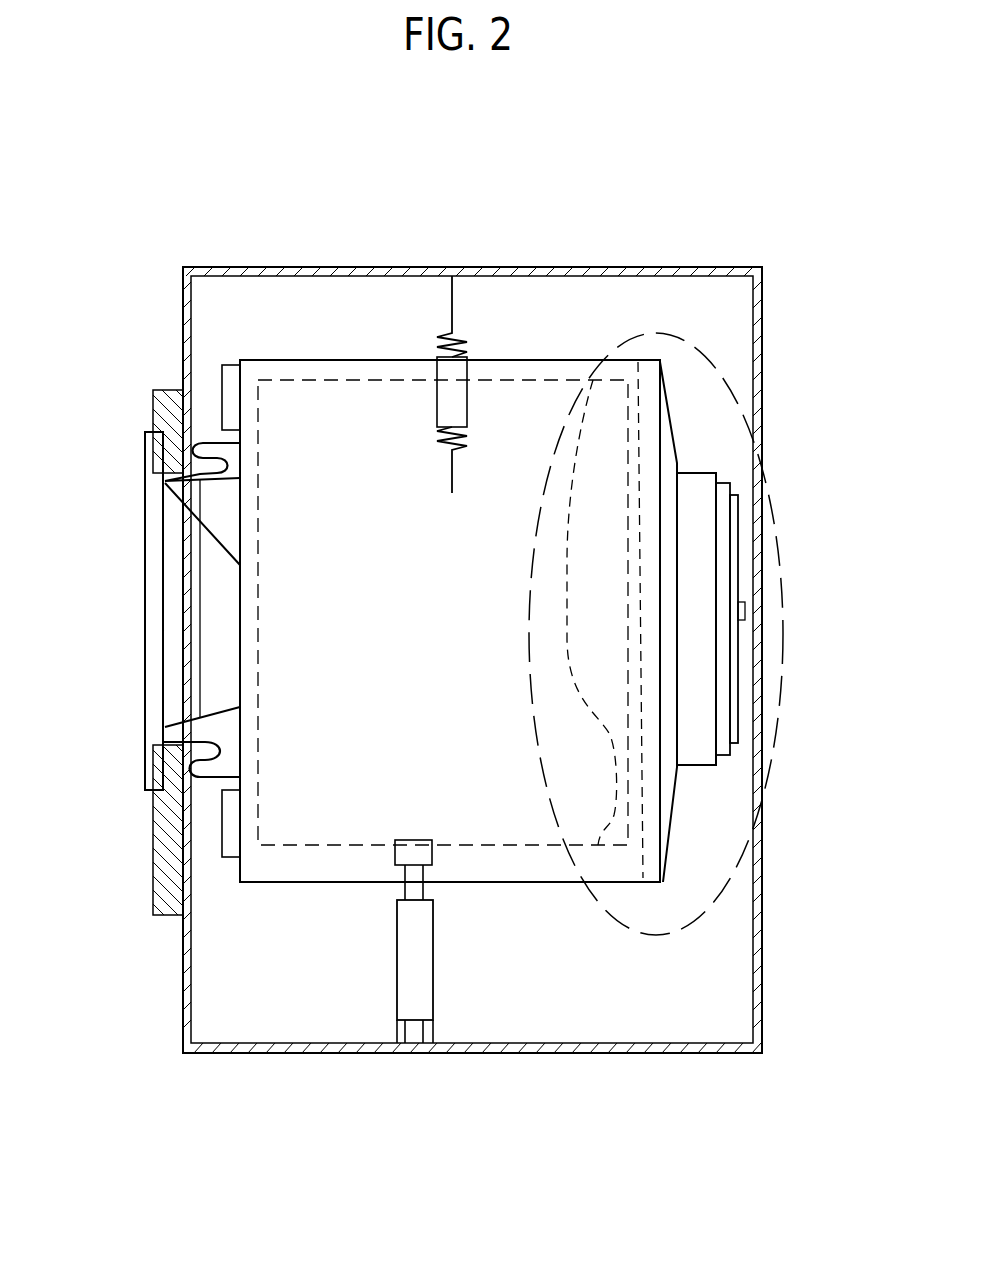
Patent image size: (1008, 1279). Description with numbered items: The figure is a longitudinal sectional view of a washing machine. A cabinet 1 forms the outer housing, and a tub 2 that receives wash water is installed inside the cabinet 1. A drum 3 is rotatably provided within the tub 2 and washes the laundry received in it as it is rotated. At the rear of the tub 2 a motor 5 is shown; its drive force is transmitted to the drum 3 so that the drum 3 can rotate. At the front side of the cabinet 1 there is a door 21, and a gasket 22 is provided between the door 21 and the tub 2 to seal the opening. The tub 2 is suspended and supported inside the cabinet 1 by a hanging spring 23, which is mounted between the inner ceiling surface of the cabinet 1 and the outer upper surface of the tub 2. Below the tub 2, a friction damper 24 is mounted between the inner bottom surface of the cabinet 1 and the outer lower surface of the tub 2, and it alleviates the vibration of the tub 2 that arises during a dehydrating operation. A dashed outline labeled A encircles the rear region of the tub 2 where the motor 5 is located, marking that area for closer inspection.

The cabinet 1 is at (262, 267).
The tub 2 is at (563, 360).
The drum 3 is at (357, 378).
The motor 5 is at (722, 682).
The door 21 is at (152, 610).
The gasket 22 is at (193, 773).
The hanging spring 23 is at (460, 337).
The friction damper 24 is at (402, 993).
The region A is at (730, 388).